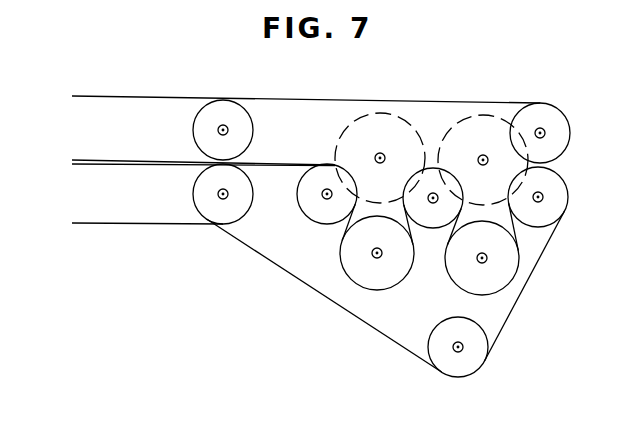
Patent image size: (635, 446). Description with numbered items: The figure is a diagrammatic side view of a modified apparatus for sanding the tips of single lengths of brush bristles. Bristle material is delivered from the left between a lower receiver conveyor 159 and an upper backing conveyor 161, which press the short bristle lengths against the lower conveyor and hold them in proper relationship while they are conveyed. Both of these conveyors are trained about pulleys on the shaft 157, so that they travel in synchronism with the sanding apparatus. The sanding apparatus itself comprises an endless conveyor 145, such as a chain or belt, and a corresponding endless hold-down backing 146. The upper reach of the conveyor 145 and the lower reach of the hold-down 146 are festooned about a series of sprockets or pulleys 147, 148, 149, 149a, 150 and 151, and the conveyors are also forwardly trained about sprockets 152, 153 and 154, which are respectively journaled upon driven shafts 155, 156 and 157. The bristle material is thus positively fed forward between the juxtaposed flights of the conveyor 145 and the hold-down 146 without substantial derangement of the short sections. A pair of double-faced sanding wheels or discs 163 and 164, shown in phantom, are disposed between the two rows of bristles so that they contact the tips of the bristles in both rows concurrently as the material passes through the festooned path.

The conveyor 145 is at (288, 276).
The hold-down backing 146 is at (337, 100).
The sprocket or pulley 147 is at (311, 216).
The sprocket or pulley 148 is at (432, 223).
The sprocket or pulley 149 is at (567, 192).
The sprocket or pulley 149a is at (569, 125).
The sprocket or pulley 150 is at (386, 286).
The sprocket or pulley 151 is at (462, 283).
The sprocket 152 is at (484, 326).
The sprocket 153 is at (193, 195).
The sprocket 154 is at (193, 131).
The driven shaft 155 is at (460, 351).
The driven shaft 156 is at (228, 194).
The driven shaft 157 is at (228, 131).
The lower receiver conveyor 159 is at (91, 164).
The upper backing conveyor 161 is at (91, 160).
The sanding wheel 163 is at (483, 115).
The sanding wheel 164 is at (386, 113).